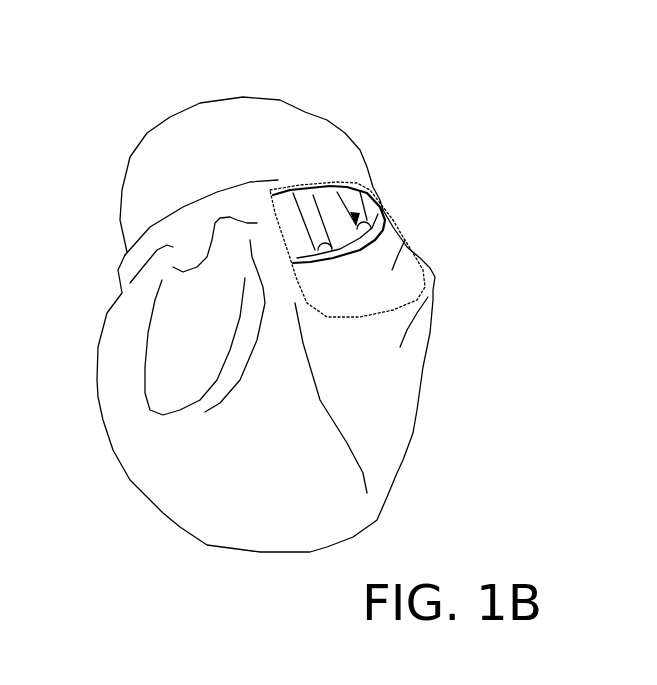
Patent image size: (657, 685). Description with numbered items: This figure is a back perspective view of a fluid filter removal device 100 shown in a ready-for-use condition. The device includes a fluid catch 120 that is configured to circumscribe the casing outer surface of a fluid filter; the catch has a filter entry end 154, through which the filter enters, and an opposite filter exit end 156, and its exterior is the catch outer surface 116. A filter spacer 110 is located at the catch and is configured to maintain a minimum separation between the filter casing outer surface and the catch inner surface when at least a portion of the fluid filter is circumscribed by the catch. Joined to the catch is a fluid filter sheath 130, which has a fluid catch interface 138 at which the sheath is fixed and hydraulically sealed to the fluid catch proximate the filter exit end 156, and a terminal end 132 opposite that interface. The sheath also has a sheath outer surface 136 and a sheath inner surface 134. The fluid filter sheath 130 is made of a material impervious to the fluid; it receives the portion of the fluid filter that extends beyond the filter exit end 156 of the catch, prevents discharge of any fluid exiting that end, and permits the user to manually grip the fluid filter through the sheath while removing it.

The fluid filter removal device 100 is at (506, 432).
The filter spacer 110 is at (363, 190).
The catch outer surface 116 is at (140, 163).
The fluid catch 120 is at (182, 163).
The fluid filter sheath 130 is at (224, 448).
The terminal end 132 is at (272, 535).
The sheath inner surface 134 is at (403, 233).
The sheath outer surface 136 is at (435, 293).
The fluid catch interface 138 is at (117, 270).
The filter entry end 154 is at (226, 137).
The filter exit end 156 is at (292, 197).